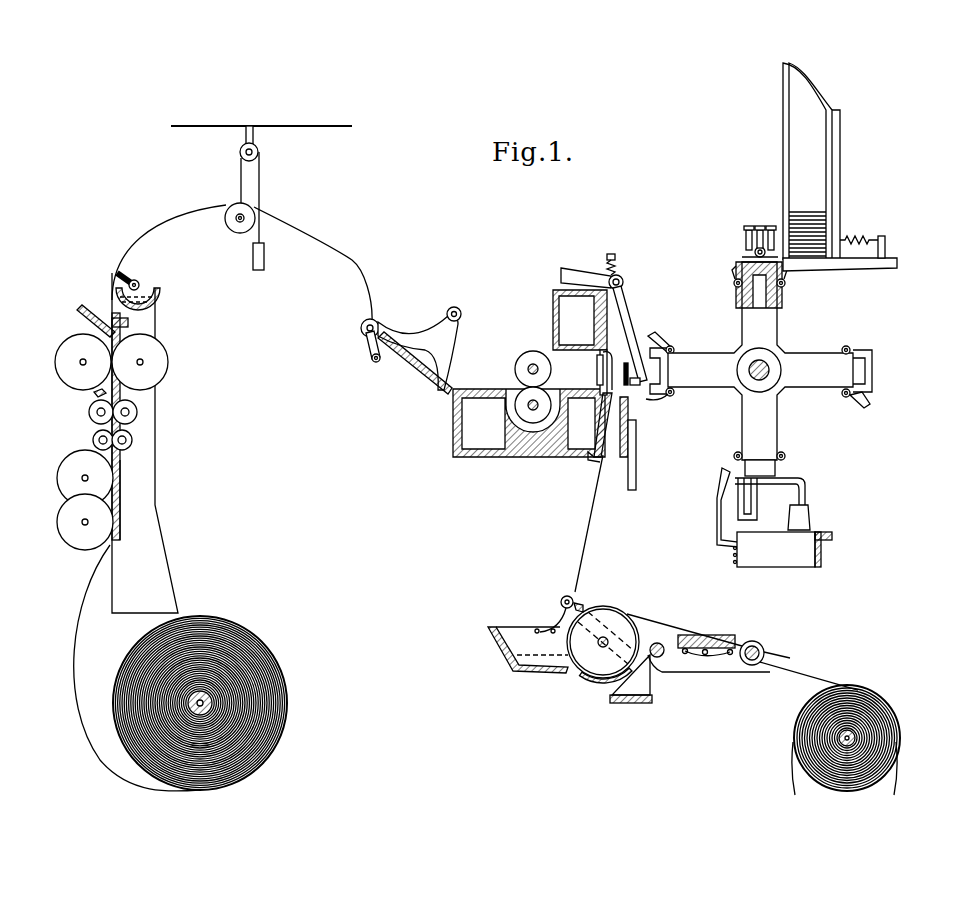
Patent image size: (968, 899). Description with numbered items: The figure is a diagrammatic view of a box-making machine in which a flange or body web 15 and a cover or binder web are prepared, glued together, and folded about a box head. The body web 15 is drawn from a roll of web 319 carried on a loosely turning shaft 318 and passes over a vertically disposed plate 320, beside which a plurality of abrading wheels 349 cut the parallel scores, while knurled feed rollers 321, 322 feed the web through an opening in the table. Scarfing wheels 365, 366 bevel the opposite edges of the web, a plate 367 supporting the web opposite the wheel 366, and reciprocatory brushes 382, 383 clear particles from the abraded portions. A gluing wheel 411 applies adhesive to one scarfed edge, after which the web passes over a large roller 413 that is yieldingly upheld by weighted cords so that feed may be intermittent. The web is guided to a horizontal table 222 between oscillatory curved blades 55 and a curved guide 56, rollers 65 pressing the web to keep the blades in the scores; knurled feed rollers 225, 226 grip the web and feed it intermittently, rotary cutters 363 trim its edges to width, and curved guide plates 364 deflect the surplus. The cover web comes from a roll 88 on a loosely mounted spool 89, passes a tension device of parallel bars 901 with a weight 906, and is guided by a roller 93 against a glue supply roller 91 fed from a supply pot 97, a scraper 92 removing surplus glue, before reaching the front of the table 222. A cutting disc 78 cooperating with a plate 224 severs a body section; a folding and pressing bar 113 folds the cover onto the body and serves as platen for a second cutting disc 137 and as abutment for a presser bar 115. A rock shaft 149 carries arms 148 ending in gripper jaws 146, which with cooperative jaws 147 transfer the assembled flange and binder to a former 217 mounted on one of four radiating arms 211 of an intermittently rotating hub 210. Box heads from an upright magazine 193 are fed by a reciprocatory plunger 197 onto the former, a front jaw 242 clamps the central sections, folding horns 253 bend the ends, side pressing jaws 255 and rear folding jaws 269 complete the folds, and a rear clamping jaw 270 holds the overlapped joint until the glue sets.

The body web 15 is at (346, 248).
The large roller 413 is at (233, 219).
The gluing wheel 411 is at (118, 274).
The brush 383 is at (97, 318).
The brush 382 is at (130, 323).
The plate 367 is at (107, 353).
The scarfing wheel 365 is at (58, 362).
The scarfing wheel 366 is at (167, 362).
The curved guide plate 364 is at (97, 394).
The rotary cutter 363 is at (95, 413).
The knurled feed roller 322 is at (93, 440).
The knurled feed roller 321 is at (130, 439).
The plate 320 is at (118, 494).
The abrading wheel 349 is at (68, 494).
The shaft 318 is at (210, 698).
The roll of web 319 is at (283, 708).
The roller 65 is at (364, 324).
The oscillatory curved blade 55 is at (412, 330).
The curved guide 56 is at (420, 390).
The knurled feed roller 226 is at (530, 360).
The horizontal table 222 is at (490, 398).
The knurled feed roller 225 is at (533, 420).
The plate 224 is at (586, 392).
The cutting disc 78 is at (600, 372).
The rock shaft 149 is at (619, 278).
The arm 148 is at (629, 315).
The gripper jaw 146 is at (645, 376).
The second cutting disc 137 is at (642, 383).
The folding and pressing bar 113 is at (630, 404).
The presser bar 115 is at (637, 436).
The gripper jaw 147 is at (668, 396).
The rear clamping jaw 270 is at (664, 350).
The radiating arm 211 is at (770, 323).
The hub 210 is at (770, 370).
The front jaw 242 is at (737, 280).
The former 217 is at (868, 375).
The magazine 193 is at (811, 161).
The plunger 197 is at (862, 258).
The folding horn 253 is at (712, 493).
The rear folding and pressing jaw 269 is at (741, 482).
The side pressing jaw 255 is at (766, 481).
The guide roller 93 is at (564, 598).
The scraper 92 is at (581, 604).
The glue supply roller 91 is at (612, 675).
The supply pot 97 is at (578, 679).
The weight 906 is at (705, 634).
The parallel bars 901 is at (728, 655).
The spool 89 is at (845, 738).
The roll 88 is at (886, 732).